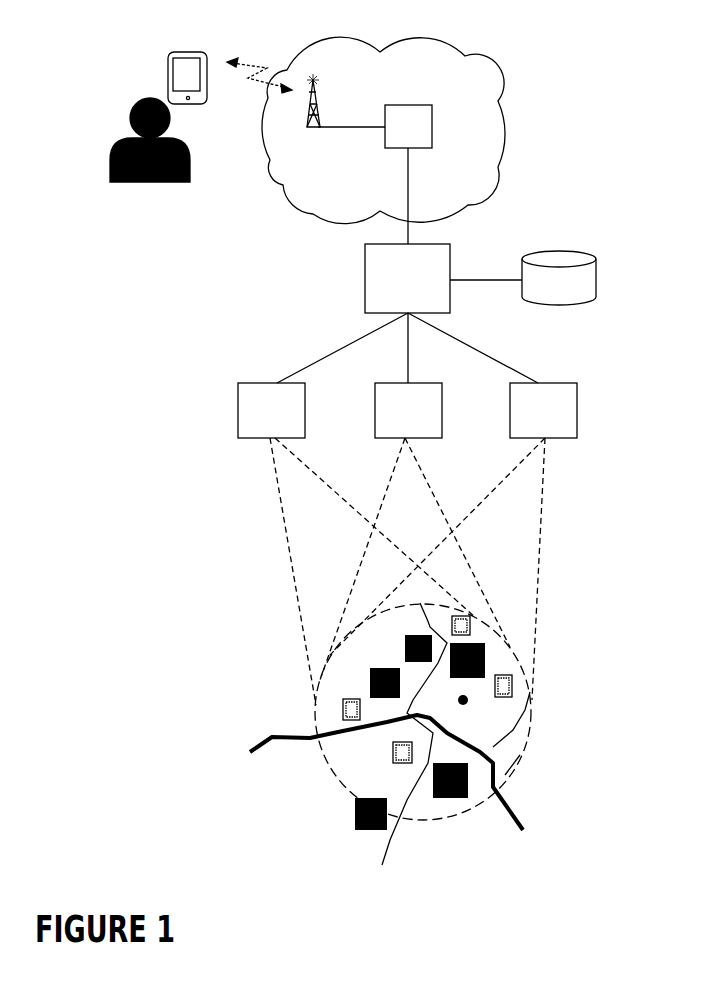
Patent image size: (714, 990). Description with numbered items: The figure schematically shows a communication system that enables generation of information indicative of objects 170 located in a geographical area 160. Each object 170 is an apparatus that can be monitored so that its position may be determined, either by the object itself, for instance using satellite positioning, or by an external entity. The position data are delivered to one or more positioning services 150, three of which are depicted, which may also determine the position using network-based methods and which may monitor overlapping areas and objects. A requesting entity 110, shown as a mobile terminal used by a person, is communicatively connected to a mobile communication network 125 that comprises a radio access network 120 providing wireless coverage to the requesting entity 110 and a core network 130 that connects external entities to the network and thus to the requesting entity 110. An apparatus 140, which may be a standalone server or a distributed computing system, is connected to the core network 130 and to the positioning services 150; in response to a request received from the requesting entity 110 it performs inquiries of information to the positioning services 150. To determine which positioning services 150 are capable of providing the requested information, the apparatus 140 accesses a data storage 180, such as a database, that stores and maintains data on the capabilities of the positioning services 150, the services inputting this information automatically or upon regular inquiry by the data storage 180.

The requesting entity 110 is at (172, 56).
The radio access network 120 is at (317, 128).
The mobile communication network 125 is at (498, 93).
The core network 130 is at (433, 120).
The apparatus 140 is at (365, 285).
The positioning service 150 is at (238, 410).
The geographical area 160 is at (523, 752).
The object 170 is at (468, 616).
The data storage 180 is at (596, 280).